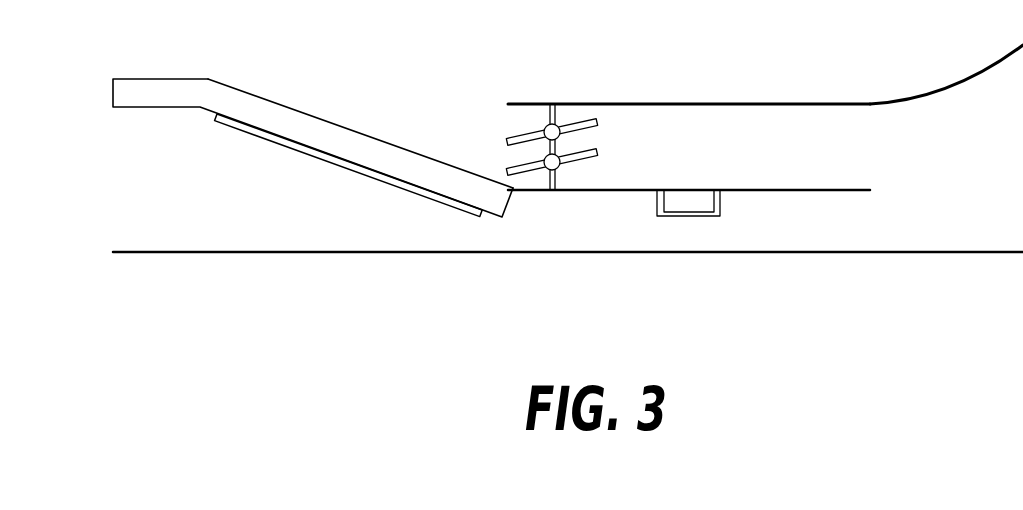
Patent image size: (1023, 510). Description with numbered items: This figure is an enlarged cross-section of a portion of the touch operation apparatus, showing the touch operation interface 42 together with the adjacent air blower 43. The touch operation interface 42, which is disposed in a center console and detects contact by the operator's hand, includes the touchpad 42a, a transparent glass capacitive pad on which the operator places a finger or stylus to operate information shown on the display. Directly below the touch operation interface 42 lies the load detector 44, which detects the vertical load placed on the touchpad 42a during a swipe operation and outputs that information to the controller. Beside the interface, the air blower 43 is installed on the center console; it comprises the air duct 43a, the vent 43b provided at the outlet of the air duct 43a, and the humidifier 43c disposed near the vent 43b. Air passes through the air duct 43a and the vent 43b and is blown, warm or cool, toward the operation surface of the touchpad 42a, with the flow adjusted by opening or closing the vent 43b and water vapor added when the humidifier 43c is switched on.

The touch operation interface 42 is at (313, 127).
The touchpad 42a is at (372, 138).
The load detector 44 is at (322, 158).
The air blower 43 is at (735, 123).
The air duct 43a is at (795, 147).
The vent 43b is at (543, 128).
The humidifier 43c is at (688, 193).